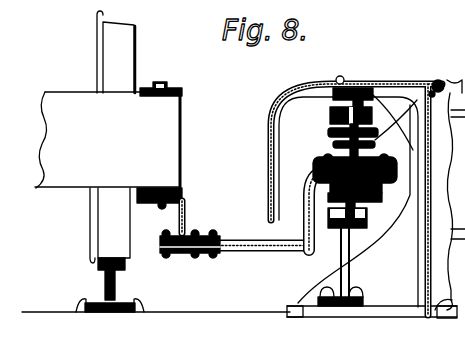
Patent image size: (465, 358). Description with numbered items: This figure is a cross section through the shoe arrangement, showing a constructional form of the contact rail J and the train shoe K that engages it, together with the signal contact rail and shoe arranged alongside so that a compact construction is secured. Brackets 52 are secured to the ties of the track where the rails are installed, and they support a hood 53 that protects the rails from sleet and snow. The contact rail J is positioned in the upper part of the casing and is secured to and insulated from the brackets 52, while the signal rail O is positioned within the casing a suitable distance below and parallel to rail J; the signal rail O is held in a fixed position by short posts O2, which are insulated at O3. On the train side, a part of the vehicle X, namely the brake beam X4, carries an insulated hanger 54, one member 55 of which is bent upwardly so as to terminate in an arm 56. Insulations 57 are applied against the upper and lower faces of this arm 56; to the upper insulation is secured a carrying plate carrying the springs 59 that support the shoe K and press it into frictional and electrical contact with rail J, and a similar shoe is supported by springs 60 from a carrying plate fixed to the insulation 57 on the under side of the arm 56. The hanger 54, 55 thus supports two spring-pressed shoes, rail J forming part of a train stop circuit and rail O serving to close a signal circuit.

The vehicle X is at (25, 43).
The brake beam X4 is at (55, 190).
The contact rail J is at (345, 112).
The train shoe K is at (330, 114).
The brackets 52 is at (354, 204).
The hood 53 is at (328, 82).
The insulated hanger 54 is at (187, 213).
The hanger member 55 is at (236, 252).
The arm 56 is at (392, 170).
The insulations 57 is at (330, 170).
The springs 59 is at (434, 86).
The springs 60 is at (303, 200).
The signal rail O is at (332, 207).
The short posts O2 is at (340, 270).
The insulation O3 is at (317, 298).